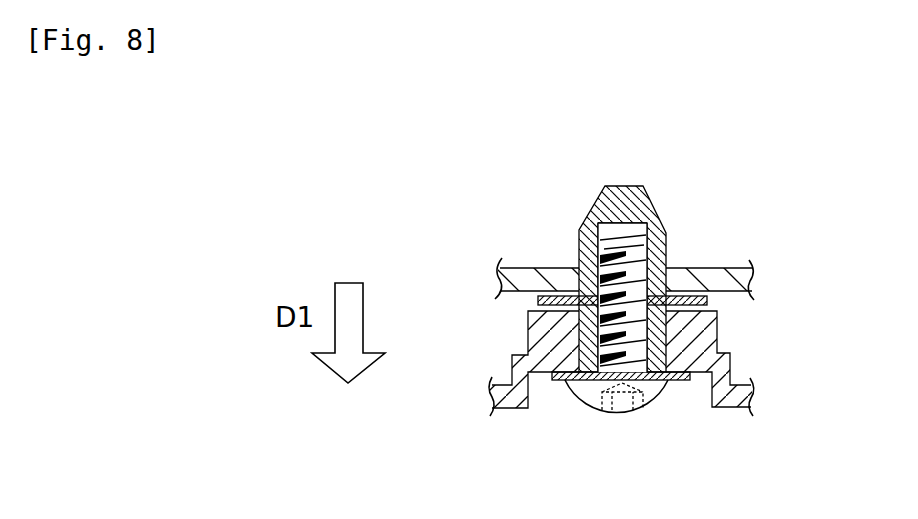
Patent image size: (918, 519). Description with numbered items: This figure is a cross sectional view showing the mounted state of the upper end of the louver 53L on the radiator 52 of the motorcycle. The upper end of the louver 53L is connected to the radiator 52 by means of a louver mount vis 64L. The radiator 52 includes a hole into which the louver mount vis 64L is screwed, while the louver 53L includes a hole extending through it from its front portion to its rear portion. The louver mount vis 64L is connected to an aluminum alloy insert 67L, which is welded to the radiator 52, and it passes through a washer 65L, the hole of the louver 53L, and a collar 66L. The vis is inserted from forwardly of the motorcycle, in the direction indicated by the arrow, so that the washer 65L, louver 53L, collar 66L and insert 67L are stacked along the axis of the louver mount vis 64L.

The radiator 52 is at (752, 283).
The louver 53L is at (755, 396).
The louver mount vis 64L is at (584, 403).
The washer 65L is at (684, 383).
The collar 66L is at (706, 310).
The aluminum alloy insert 67L is at (707, 303).